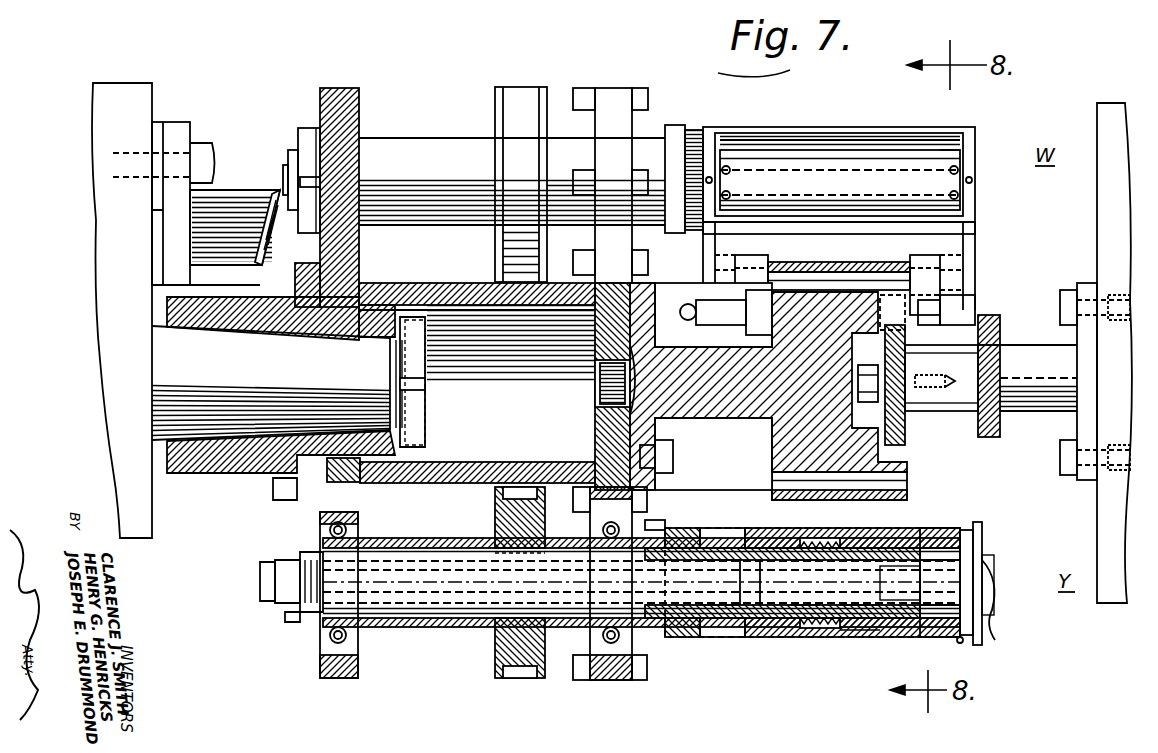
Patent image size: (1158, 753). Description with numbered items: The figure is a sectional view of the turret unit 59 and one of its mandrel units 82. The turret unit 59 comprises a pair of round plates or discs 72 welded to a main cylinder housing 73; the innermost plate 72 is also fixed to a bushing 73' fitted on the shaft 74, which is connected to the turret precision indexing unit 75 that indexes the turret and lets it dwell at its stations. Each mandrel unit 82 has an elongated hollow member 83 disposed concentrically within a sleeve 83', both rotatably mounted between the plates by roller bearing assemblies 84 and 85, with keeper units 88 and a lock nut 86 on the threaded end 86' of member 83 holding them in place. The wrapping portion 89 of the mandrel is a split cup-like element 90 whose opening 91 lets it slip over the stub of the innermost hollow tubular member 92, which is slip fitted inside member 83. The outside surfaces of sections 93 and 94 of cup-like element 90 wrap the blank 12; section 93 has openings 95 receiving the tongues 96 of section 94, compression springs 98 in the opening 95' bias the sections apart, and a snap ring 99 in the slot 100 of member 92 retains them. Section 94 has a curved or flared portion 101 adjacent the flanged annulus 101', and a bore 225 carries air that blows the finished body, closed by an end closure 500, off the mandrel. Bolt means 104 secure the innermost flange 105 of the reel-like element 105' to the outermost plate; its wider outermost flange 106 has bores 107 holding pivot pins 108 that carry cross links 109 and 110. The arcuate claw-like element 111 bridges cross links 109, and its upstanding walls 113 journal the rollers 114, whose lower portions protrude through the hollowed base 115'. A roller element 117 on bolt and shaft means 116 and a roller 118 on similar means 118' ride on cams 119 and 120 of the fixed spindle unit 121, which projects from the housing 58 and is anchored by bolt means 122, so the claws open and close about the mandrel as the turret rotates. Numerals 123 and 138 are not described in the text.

The turret unit 59 is at (297, 70).
The turret precision indexing unit 75 is at (110, 322).
The lock nut 86 is at (255, 378).
The threaded end 86' is at (259, 624).
The round plates or discs 72 is at (360, 100).
The mandrel or spindle unit 82 is at (425, 135).
The elongated hollow member 83 is at (477, 414).
The sleeve 83' is at (361, 606).
The roller bearing assembly 84 is at (360, 530).
The pulley 123 is at (525, 100).
The upstanding walls 113 is at (708, 128).
The roller 114 is at (830, 162).
The arcuate claw-like element 111 is at (925, 140).
The hollowed-out base 115' is at (992, 125).
The cross link 109 is at (708, 253).
The cross link 110 is at (758, 265).
The bores 107 is at (832, 268).
The pivot pin 108 is at (888, 286).
The main cylinder housing 73 is at (477, 294).
The bushing 73' is at (281, 481).
The shaft 74 is at (275, 373).
The innermost flange 105 is at (683, 377).
The reel-like element 105' is at (716, 454).
The outermost flange 106 is at (768, 386).
The bolt means 104 is at (676, 450).
The roller 118 is at (852, 314).
The bolt and shaft means 118' is at (1016, 331).
The cam 120 is at (905, 440).
The cam 119 is at (985, 440).
The fixed spindle unit 121 is at (991, 378).
The roller element 117 is at (965, 305).
The bolt and shaft means 116 is at (948, 298).
The bolt means 122 is at (1068, 288).
The housing 58 is at (1118, 603).
The keeper unit 88 is at (645, 500).
The roller bearing assembly 85 is at (660, 525).
The blank 12 is at (918, 528).
The curved or flared portion 101 is at (710, 524).
The flanged annulus 101' is at (677, 662).
The wrapping sleeve section 94 is at (760, 528).
The compression spring 98 is at (828, 680).
The sleeve section 93 is at (870, 527).
The innermost hollow tubular member 92 is at (712, 605).
The wrapping portion 89 is at (750, 640).
The bore 225 is at (735, 597).
The tongues 96 is at (815, 632).
The openings 95 is at (854, 640).
The opening 95' is at (904, 588).
The cup-like element 90 is at (858, 640).
The opening 91 is at (918, 632).
The snap ring 99 is at (985, 560).
The hook 138 is at (995, 570).
The slot 100 is at (975, 622).
The end closure 500 is at (965, 645).